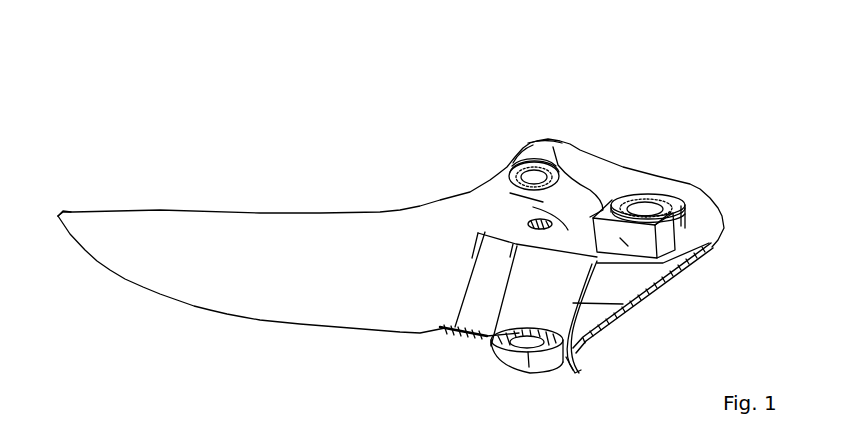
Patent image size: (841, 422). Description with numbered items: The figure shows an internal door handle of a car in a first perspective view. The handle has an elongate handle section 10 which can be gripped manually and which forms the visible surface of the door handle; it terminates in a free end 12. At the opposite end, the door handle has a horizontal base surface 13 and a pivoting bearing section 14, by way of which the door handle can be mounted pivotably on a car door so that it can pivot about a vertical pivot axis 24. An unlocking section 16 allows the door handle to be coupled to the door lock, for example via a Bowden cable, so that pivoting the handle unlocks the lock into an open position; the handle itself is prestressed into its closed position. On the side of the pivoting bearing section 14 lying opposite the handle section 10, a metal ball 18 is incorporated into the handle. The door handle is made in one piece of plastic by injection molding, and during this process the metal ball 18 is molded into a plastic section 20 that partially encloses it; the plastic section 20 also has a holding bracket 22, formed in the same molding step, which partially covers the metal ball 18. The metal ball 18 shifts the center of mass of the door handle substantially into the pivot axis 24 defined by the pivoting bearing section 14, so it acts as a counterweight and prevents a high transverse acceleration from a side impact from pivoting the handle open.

The handle section 10 is at (263, 230).
The free end 12 is at (72, 213).
The horizontal base surface 13 is at (512, 237).
The pivoting bearing section 14 is at (553, 165).
The unlocking section 16 is at (507, 370).
The metal ball 18 is at (633, 211).
The plastic section 20 is at (709, 246).
The holding bracket 22 is at (662, 203).
The pivot axis 24 is at (530, 138).